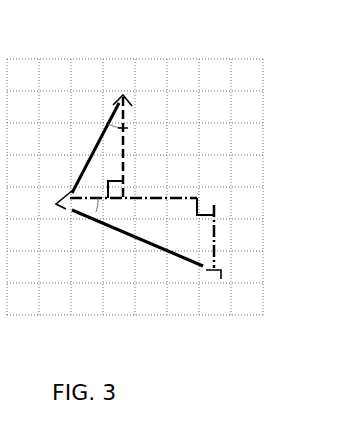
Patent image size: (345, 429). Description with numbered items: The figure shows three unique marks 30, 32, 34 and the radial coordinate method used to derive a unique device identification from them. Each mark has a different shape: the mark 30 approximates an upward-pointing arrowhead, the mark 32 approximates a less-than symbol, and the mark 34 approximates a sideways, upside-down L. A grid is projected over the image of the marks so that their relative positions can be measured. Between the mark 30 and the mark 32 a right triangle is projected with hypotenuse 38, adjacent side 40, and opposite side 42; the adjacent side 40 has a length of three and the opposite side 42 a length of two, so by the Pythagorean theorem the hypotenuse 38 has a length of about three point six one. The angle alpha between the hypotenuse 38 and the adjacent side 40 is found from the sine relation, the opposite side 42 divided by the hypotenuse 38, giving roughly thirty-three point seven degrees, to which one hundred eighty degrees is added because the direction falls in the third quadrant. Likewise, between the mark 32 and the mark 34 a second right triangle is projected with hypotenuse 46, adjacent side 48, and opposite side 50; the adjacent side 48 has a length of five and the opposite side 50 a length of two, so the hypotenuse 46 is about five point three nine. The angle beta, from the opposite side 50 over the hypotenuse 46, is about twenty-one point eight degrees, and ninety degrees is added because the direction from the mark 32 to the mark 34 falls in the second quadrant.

The mark 30 is at (121, 92).
The hypotenuse 38 is at (89, 152).
The opposite side 42 is at (86, 195).
The adjacent side 40 is at (127, 163).
The adjacent side 48 is at (172, 196).
The opposite side 50 is at (218, 233).
The mark 32 is at (57, 206).
The hypotenuse 46 is at (142, 241).
The mark 34 is at (214, 272).